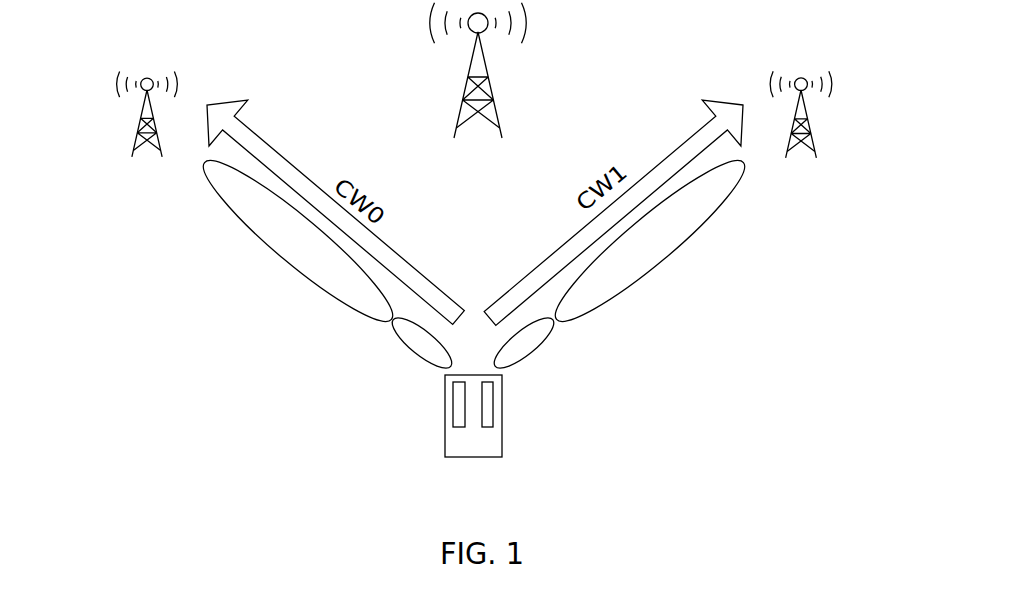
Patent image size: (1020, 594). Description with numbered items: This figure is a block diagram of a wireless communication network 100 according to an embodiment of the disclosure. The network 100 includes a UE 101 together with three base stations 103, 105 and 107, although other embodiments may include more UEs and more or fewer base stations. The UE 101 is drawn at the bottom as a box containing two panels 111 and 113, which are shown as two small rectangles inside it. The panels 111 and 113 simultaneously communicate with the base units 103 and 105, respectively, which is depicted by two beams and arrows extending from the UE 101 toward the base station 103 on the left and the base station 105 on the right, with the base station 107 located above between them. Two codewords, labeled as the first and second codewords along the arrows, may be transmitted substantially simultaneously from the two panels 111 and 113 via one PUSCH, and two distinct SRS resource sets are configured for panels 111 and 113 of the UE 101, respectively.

The wireless communication network 100 is at (731, 397).
The UE 101 is at (492, 440).
The base station 103 is at (130, 126).
The base station 105 is at (812, 127).
The base station 107 is at (500, 85).
The panel 111 is at (458, 406).
The panel 113 is at (492, 407).